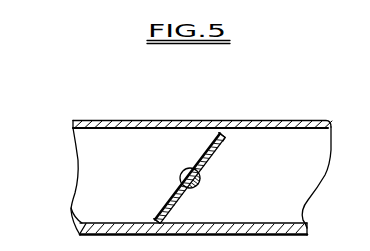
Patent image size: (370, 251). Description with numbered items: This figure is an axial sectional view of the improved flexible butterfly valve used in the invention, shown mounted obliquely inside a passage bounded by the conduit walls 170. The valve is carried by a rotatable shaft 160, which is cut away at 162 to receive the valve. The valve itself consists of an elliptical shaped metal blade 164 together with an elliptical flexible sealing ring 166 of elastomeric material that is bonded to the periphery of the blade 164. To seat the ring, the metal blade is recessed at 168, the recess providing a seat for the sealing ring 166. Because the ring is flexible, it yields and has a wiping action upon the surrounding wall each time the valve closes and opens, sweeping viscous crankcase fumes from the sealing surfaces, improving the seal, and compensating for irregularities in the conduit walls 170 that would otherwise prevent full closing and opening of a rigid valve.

The rotatable shaft 160 is at (201, 186).
The cut-away portion of shaft 162 is at (184, 166).
The elliptical metal blade 164 is at (167, 198).
The flexible sealing ring 166 is at (155, 212).
The recess in blade 168 is at (222, 145).
The conduit walls 170 is at (165, 121).